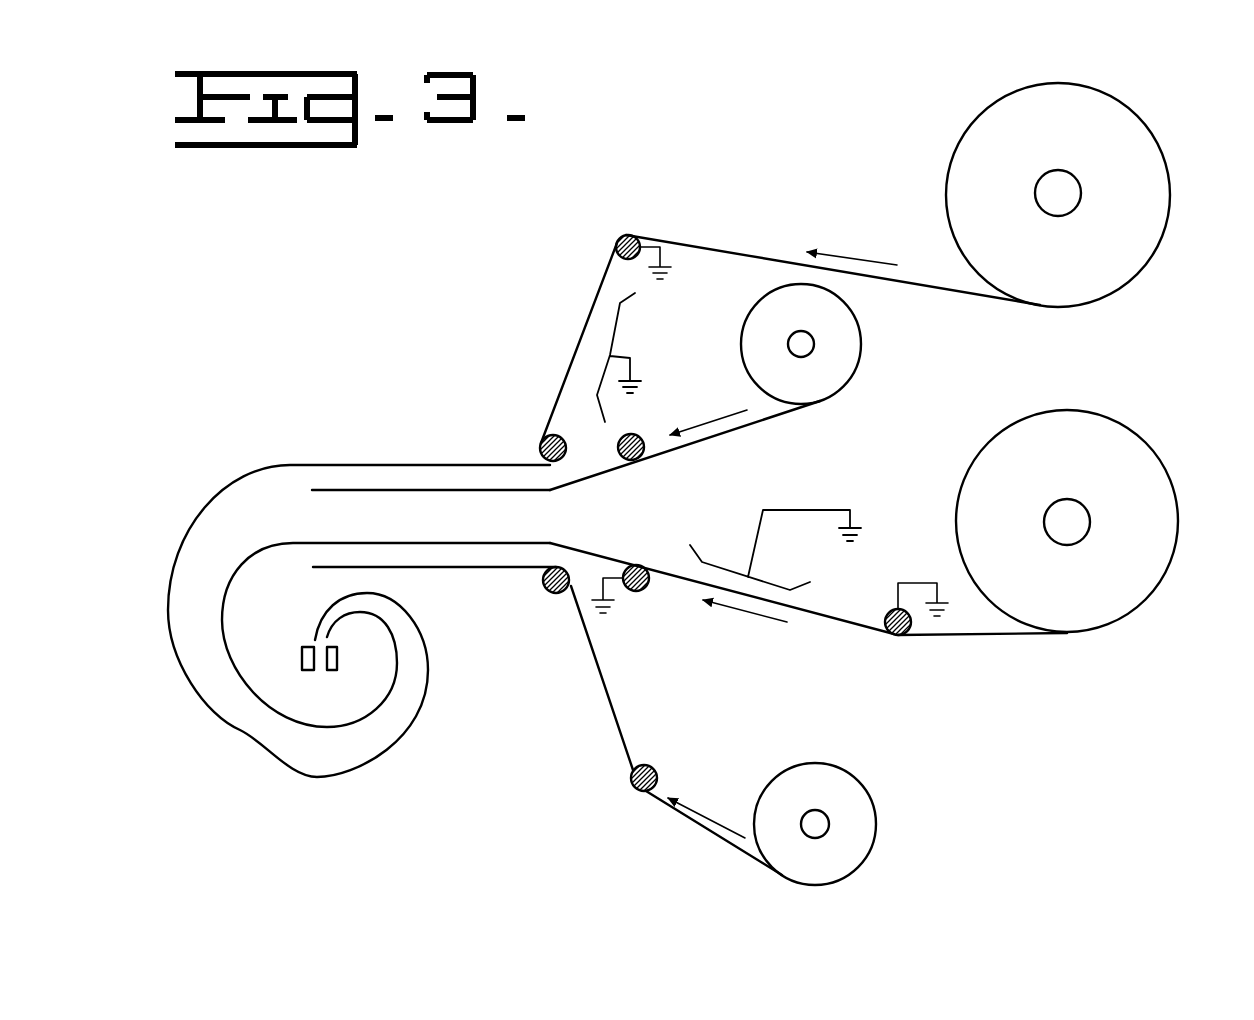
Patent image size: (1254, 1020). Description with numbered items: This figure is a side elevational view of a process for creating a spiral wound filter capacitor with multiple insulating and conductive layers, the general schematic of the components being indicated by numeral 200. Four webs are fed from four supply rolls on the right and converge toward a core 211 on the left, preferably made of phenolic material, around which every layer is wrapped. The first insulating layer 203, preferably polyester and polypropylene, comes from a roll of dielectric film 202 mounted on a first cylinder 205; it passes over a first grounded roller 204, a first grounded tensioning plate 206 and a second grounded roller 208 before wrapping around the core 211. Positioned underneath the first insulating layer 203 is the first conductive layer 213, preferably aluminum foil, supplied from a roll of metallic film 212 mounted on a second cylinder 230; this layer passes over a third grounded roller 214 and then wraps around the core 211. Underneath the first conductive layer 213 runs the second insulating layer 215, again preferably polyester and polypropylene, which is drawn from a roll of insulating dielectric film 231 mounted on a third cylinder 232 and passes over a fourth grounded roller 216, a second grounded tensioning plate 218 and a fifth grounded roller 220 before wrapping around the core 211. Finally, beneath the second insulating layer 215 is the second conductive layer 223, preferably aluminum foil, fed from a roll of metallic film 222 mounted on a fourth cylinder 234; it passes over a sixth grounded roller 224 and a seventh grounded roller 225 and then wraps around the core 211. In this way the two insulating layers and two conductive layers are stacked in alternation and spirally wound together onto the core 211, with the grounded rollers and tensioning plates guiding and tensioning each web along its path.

The general schematic of spiral wound filter capacitor components 200 is at (822, 172).
The roll of dielectric film 202 is at (1145, 122).
The first insulating layer 203 is at (720, 248).
The first grounded roller 204 is at (614, 228).
The first cylinder 205 is at (1058, 193).
The first grounded tensioning plate 206 is at (615, 333).
The second grounded roller 208 is at (542, 435).
The core 211 is at (322, 675).
The roll of metallic film 212 is at (858, 312).
The first conductive layer 213 is at (717, 441).
The third grounded roller 214 is at (645, 430).
The second insulating layer 215 is at (1005, 636).
The fourth grounded roller 216 is at (900, 637).
The second grounded tensioning plate 218 is at (772, 580).
The fifth grounded roller 220 is at (645, 594).
The roll of metallic film 222 is at (862, 785).
The second conductive layer 223 is at (692, 824).
The sixth grounded roller 224 is at (631, 780).
The seventh grounded roller 225 is at (547, 594).
The second cylinder 230 is at (802, 344).
The roll of insulating dielectric film 231 is at (1117, 423).
The third cylinder 232 is at (1068, 522).
The fourth cylinder 234 is at (818, 824).